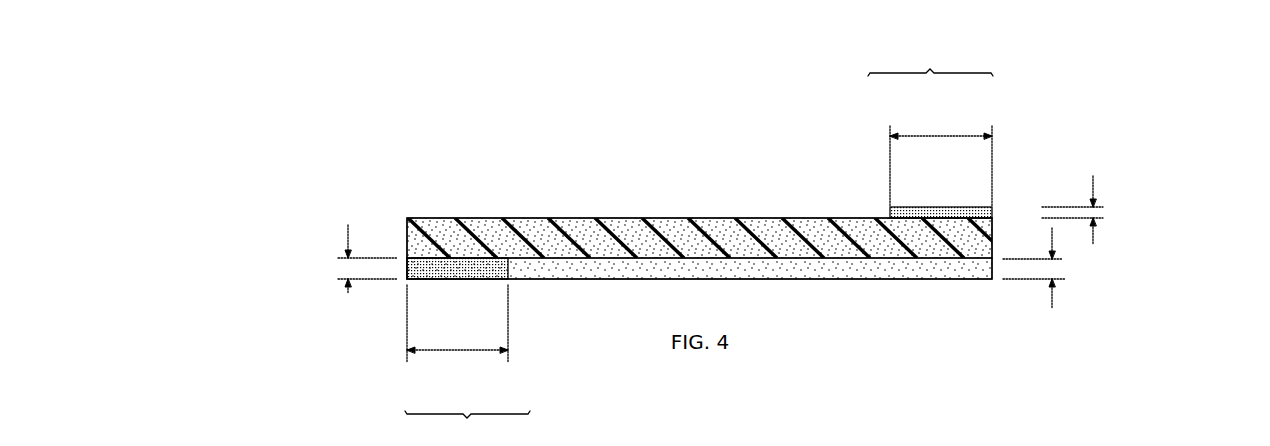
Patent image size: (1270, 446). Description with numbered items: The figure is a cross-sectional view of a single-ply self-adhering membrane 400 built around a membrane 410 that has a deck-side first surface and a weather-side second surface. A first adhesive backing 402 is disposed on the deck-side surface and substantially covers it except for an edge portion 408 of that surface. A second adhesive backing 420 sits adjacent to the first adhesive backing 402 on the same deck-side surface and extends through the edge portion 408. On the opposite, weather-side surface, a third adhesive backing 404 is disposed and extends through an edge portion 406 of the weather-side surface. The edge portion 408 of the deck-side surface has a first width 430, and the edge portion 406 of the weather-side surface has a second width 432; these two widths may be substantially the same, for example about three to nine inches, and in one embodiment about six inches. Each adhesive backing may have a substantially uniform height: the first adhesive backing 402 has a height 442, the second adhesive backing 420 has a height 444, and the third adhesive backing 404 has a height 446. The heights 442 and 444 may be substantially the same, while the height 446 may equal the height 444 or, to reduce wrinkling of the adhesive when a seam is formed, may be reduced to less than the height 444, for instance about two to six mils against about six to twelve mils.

The self-adhering membrane 400 is at (570, 76).
The first adhesive backing 402 is at (805, 281).
The third adhesive backing 404 is at (940, 206).
The edge portion of the weather-side surface 406 is at (930, 56).
The edge portion of the deck-side surface 408 is at (467, 428).
The membrane 410 is at (492, 216).
The second adhesive backing 420 is at (458, 282).
The first width 430 is at (457, 353).
The second width 432 is at (942, 133).
The height of the first adhesive backing 442 is at (1057, 297).
The height of the second adhesive backing 444 is at (346, 300).
The height of the third adhesive backing 446 is at (1096, 184).